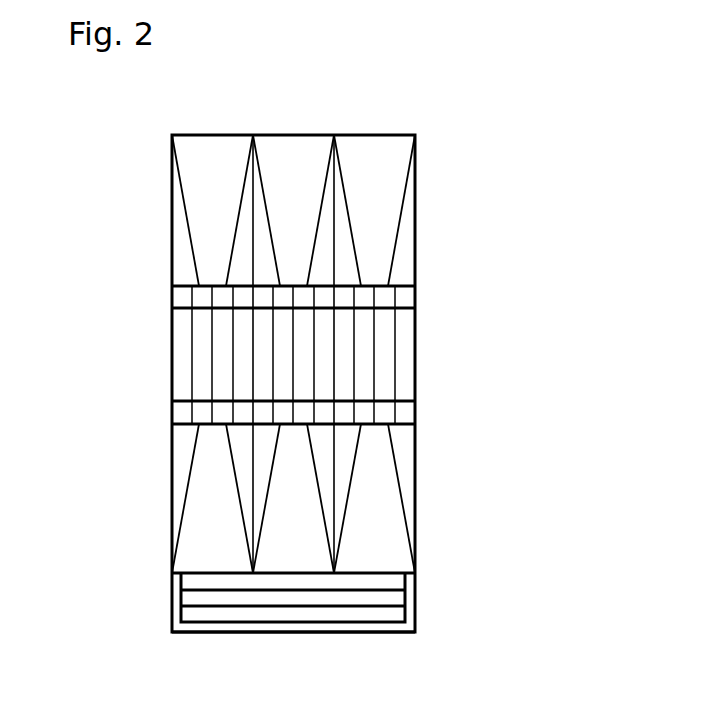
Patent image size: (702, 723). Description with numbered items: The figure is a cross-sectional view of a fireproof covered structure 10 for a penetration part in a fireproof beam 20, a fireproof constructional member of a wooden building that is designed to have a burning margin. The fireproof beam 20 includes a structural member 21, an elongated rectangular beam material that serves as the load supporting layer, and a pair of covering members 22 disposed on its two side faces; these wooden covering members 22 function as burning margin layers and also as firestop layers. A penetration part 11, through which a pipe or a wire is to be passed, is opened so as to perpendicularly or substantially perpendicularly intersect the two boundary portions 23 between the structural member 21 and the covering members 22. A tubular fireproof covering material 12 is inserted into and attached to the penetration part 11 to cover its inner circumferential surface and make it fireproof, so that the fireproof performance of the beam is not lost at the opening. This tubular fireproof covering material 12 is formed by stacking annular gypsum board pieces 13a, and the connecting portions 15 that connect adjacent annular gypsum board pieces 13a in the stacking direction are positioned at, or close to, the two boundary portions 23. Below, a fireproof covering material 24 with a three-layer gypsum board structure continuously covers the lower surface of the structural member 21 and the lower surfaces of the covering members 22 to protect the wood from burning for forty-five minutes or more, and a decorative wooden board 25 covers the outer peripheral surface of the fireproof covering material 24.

The fireproof covered structure 10 is at (173, 316).
The penetration part 11 is at (403, 322).
The tubular fireproof covering material 12 is at (393, 375).
The annular gypsum board pieces 13a is at (312, 390).
The connecting portions 15 is at (250, 337).
The fireproof beam 20 is at (417, 193).
The structural member 21 is at (299, 150).
The covering members 22 is at (212, 150).
The boundary portions 23 is at (334, 243).
The fireproof covering material 24 is at (303, 595).
The decorative wooden board 25 is at (400, 633).